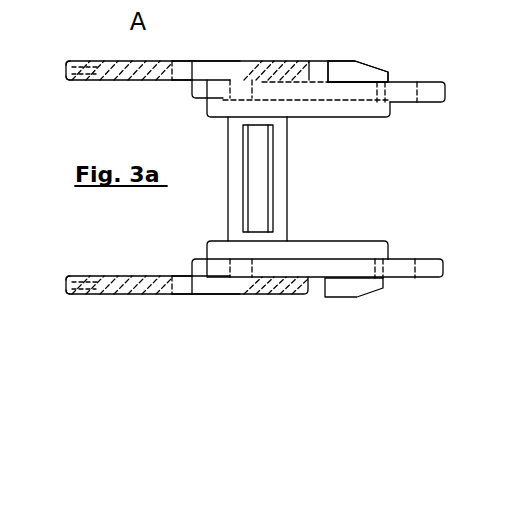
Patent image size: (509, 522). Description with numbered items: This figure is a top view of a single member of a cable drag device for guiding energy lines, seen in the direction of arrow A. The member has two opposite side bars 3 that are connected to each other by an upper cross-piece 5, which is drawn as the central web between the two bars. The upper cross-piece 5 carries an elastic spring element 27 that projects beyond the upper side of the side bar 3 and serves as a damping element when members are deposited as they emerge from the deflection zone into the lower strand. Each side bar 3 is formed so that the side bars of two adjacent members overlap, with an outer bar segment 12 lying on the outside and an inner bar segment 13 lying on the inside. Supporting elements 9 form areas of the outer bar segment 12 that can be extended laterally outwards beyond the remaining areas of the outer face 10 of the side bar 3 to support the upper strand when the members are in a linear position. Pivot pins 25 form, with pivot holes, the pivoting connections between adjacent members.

The side bar 3 is at (262, 87).
The upper cross-piece 5 is at (280, 163).
The supporting element 9 is at (75, 58).
The outer face 10 is at (230, 60).
The outer bar segment 12 is at (188, 60).
The inner bar segment 13 is at (405, 82).
The pivot pin 25 is at (355, 72).
The elastic spring element 27 is at (253, 178).